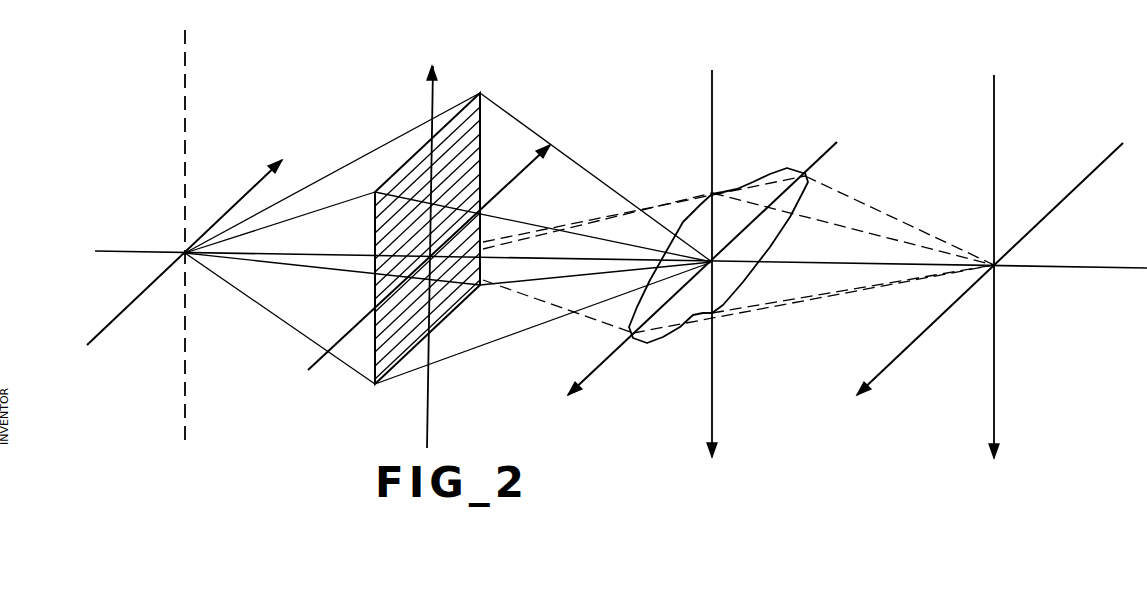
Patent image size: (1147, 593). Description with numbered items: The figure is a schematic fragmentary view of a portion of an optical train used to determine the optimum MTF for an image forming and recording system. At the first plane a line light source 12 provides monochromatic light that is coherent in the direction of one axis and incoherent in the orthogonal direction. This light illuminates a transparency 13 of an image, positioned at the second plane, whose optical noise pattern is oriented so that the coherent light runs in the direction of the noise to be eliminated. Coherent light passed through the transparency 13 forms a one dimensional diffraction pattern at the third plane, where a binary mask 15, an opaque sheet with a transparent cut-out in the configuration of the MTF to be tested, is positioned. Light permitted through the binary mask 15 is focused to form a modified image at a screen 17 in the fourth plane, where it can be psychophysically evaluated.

The line light source 12 is at (240, 196).
The transparency 13 is at (452, 43).
The binary mask 15 is at (740, 61).
The screen 17 is at (1028, 68).